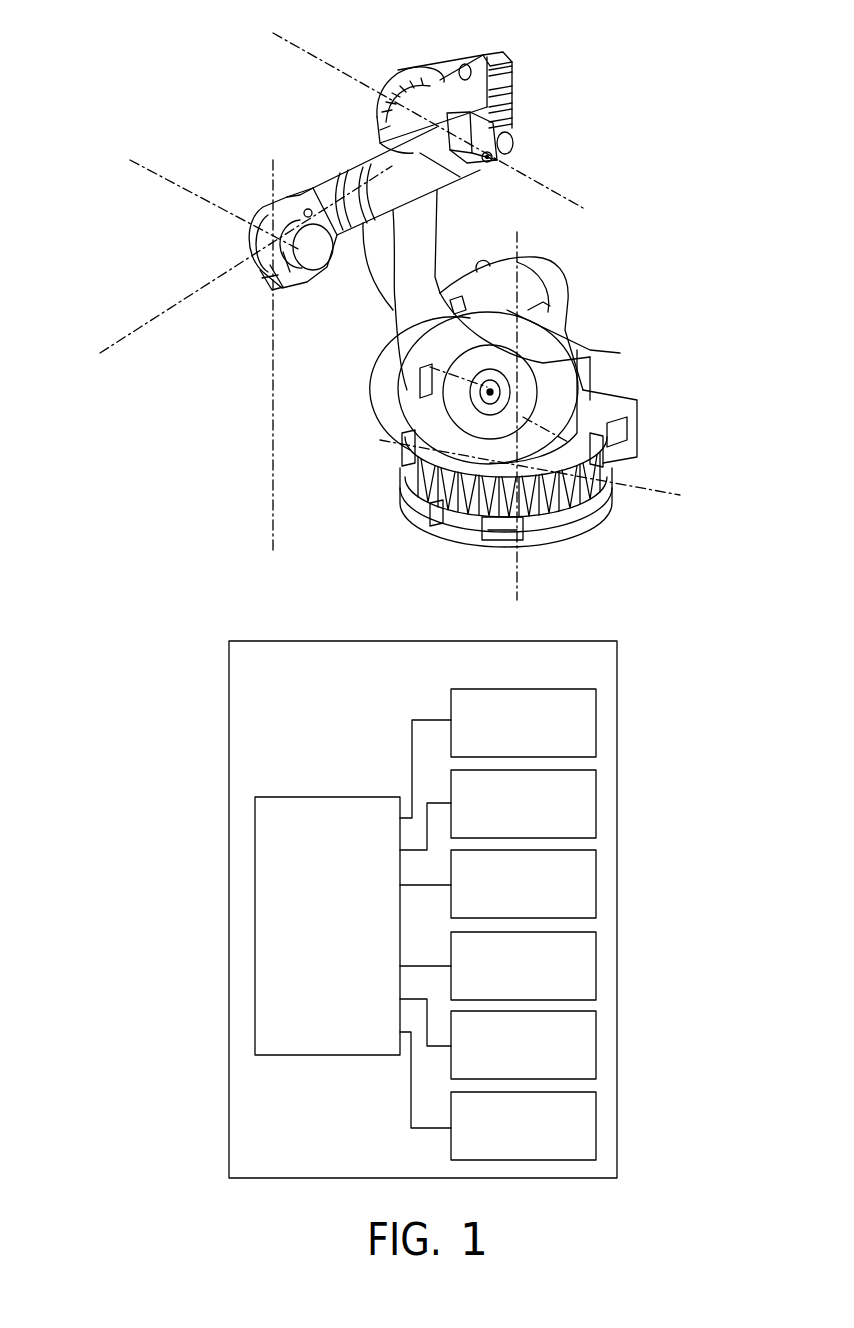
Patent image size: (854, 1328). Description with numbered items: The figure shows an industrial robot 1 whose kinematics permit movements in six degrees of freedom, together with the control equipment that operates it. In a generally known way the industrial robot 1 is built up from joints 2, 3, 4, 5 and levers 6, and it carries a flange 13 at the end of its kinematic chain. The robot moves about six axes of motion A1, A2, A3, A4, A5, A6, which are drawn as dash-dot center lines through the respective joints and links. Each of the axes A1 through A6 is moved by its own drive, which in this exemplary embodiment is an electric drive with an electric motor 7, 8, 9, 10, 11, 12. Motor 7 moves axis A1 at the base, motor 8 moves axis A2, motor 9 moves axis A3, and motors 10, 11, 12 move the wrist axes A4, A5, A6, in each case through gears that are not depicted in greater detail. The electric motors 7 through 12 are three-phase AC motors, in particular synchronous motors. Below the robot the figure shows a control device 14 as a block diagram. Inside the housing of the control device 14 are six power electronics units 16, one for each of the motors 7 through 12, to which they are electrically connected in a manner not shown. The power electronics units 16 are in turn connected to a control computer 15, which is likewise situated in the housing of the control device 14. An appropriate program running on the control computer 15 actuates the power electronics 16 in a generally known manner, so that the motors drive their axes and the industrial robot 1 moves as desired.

The industrial robot 1 is at (668, 240).
The joint 2 is at (247, 240).
The joint 3 is at (412, 82).
The joint 4 is at (405, 432).
The joint 5 is at (349, 174).
The lever 6 is at (428, 220).
The electric motor 7 is at (623, 427).
The electric motor 8 is at (562, 290).
The electric motor 9 is at (490, 173).
The electric motor 10 is at (512, 72).
The electric motor 11 is at (512, 110).
The electric motor 12 is at (508, 143).
The flange 13 is at (263, 282).
The control device 14 is at (229, 666).
The control computer 15 is at (255, 863).
The power electronics unit 16 is at (596, 724).
The axis of motion A1 is at (510, 597).
The axis of motion A2 is at (668, 493).
The axis of motion A3 is at (578, 203).
The axis of motion A4 is at (132, 332).
The axis of motion A5 is at (146, 170).
The axis of motion A6 is at (273, 494).